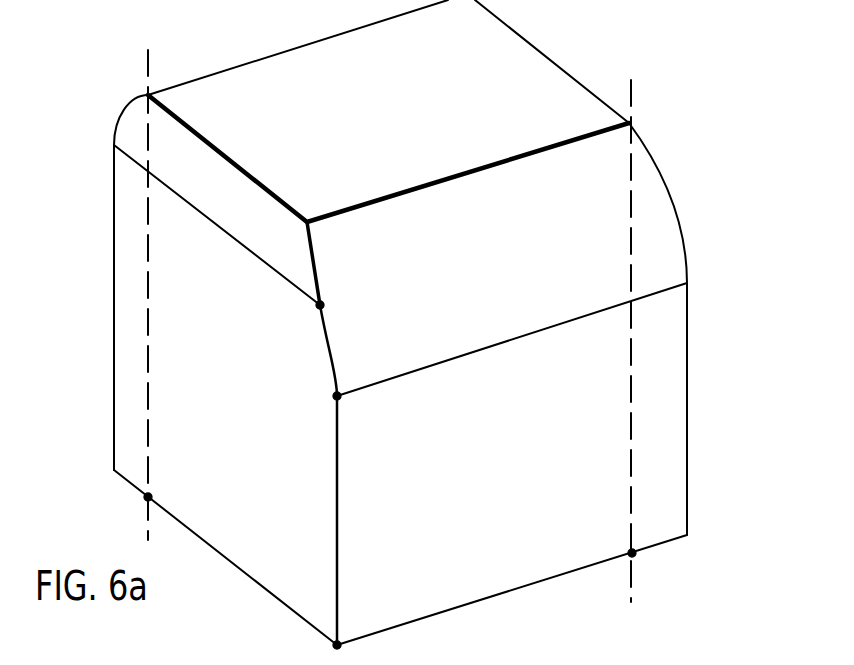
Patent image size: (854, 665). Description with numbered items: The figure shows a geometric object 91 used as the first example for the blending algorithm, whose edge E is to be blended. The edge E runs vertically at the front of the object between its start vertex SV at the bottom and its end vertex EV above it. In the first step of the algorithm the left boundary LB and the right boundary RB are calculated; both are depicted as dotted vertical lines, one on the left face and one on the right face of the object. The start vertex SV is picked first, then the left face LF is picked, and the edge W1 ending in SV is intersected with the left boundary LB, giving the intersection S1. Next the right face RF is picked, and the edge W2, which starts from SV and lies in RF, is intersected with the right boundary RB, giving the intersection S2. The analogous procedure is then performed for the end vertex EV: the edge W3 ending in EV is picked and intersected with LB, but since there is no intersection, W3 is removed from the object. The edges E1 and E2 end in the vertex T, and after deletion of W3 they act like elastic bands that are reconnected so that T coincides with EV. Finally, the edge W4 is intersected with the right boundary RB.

The geometric object 91 is at (658, 74).
The edge E1 is at (311, 252).
The edge E2 is at (236, 240).
The vertex T is at (322, 304).
The edge W3 is at (332, 345).
The edge W4 is at (492, 346).
The left boundary LB is at (147, 300).
The right boundary RB is at (631, 406).
The left face LF is at (245, 414).
The right face RF is at (510, 473).
The end vertex EV is at (340, 398).
The edge E is at (339, 508).
The intersection S1 is at (150, 496).
The edge W1 is at (218, 552).
The edge W2 is at (500, 593).
The start vertex SV is at (339, 642).
The intersection S2 is at (634, 555).